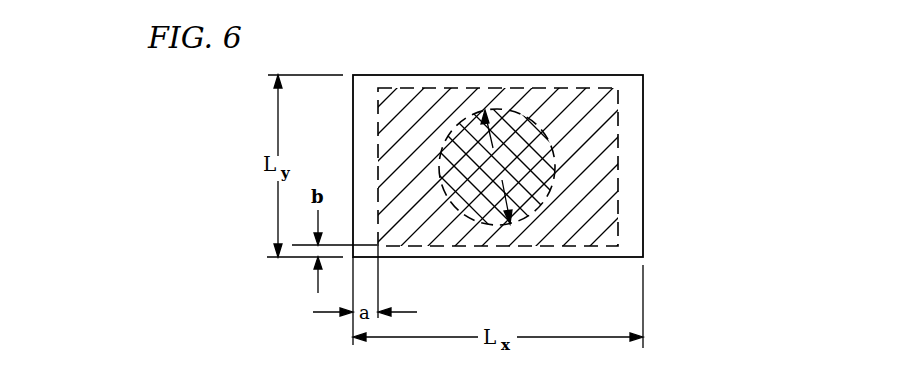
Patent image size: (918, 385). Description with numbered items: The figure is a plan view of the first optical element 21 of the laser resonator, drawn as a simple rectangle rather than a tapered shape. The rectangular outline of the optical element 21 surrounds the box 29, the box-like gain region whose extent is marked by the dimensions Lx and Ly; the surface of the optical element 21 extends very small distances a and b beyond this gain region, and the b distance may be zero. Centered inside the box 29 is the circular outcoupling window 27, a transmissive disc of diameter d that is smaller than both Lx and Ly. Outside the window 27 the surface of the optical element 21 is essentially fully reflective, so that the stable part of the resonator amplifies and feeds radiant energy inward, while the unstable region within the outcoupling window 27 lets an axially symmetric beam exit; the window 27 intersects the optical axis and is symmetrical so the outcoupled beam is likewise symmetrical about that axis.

The first optical element 21 is at (643, 98).
The outcoupling window 27 is at (493, 116).
The box 29 is at (619, 153).